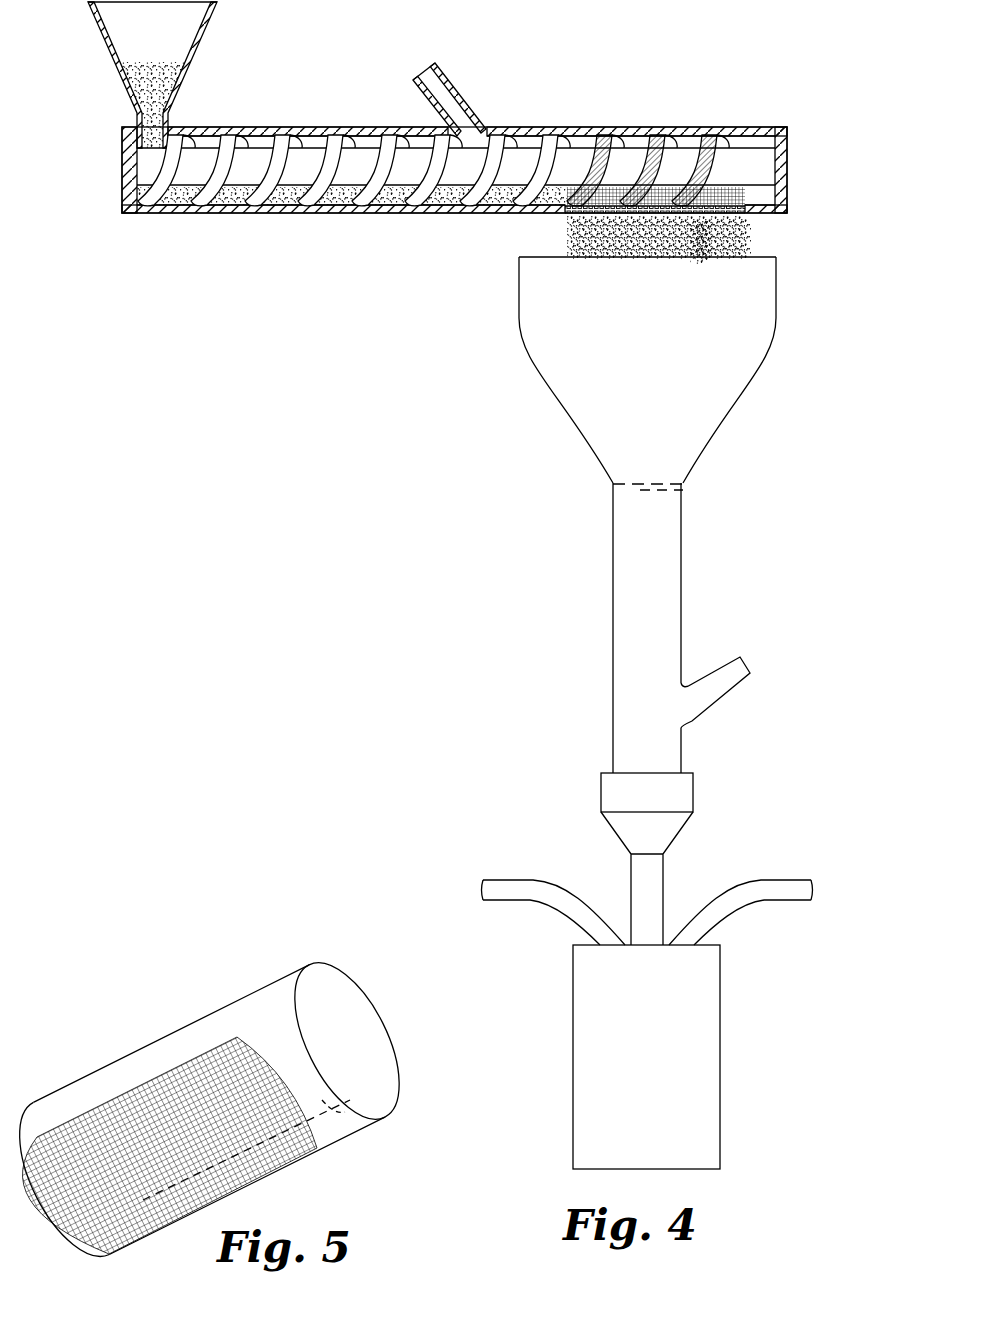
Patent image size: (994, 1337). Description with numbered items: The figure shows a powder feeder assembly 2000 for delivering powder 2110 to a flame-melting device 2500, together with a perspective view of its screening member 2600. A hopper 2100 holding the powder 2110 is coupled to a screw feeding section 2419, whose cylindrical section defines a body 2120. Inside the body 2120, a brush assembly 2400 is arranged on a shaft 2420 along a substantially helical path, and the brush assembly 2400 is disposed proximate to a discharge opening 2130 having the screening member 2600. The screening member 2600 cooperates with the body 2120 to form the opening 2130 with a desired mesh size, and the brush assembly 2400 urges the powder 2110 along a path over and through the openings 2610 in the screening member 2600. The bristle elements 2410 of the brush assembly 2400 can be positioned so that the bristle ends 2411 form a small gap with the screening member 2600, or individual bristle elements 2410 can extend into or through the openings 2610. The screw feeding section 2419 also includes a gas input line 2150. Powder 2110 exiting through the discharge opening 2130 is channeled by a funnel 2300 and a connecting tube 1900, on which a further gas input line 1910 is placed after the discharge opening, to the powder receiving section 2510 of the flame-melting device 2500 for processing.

In FIG. 4, the powder feeder assembly 2000 is at (418, 340).
In FIG. 4, the hopper 2100 is at (192, 39).
In FIG. 4, the powder 2110 is at (600, 248).
In FIG. 4, the body 2120 is at (392, 214).
In FIG. 4, the discharge opening 2130 is at (698, 214).
In FIG. 4, the gas input line 2150 is at (450, 98).
In FIG. 4, the funnel 2300 is at (740, 387).
In FIG. 4, the brush assembly 2400 is at (727, 137).
In FIG. 4, the bristle element 2410 is at (658, 128).
In FIG. 4, the bristle ends 2411 is at (710, 170).
In FIG. 4, the screw feeding section 2419 is at (277, 214).
In FIG. 4, the shaft 2420 is at (303, 157).
In FIG. 4, the screening member 2600 is at (744, 217).
In FIG. 5, the screening member 2600 is at (274, 993).
In FIG. 4, the openings 2610 is at (573, 215).
In FIG. 5, the openings 2610 is at (163, 1077).
In FIG. 4, the connecting tube 1900 is at (673, 575).
In FIG. 4, the gas input line 1910 is at (728, 683).
In FIG. 4, the flame-melting device 2500 is at (763, 836).
In FIG. 4, the powder receiving section 2510 is at (672, 760).